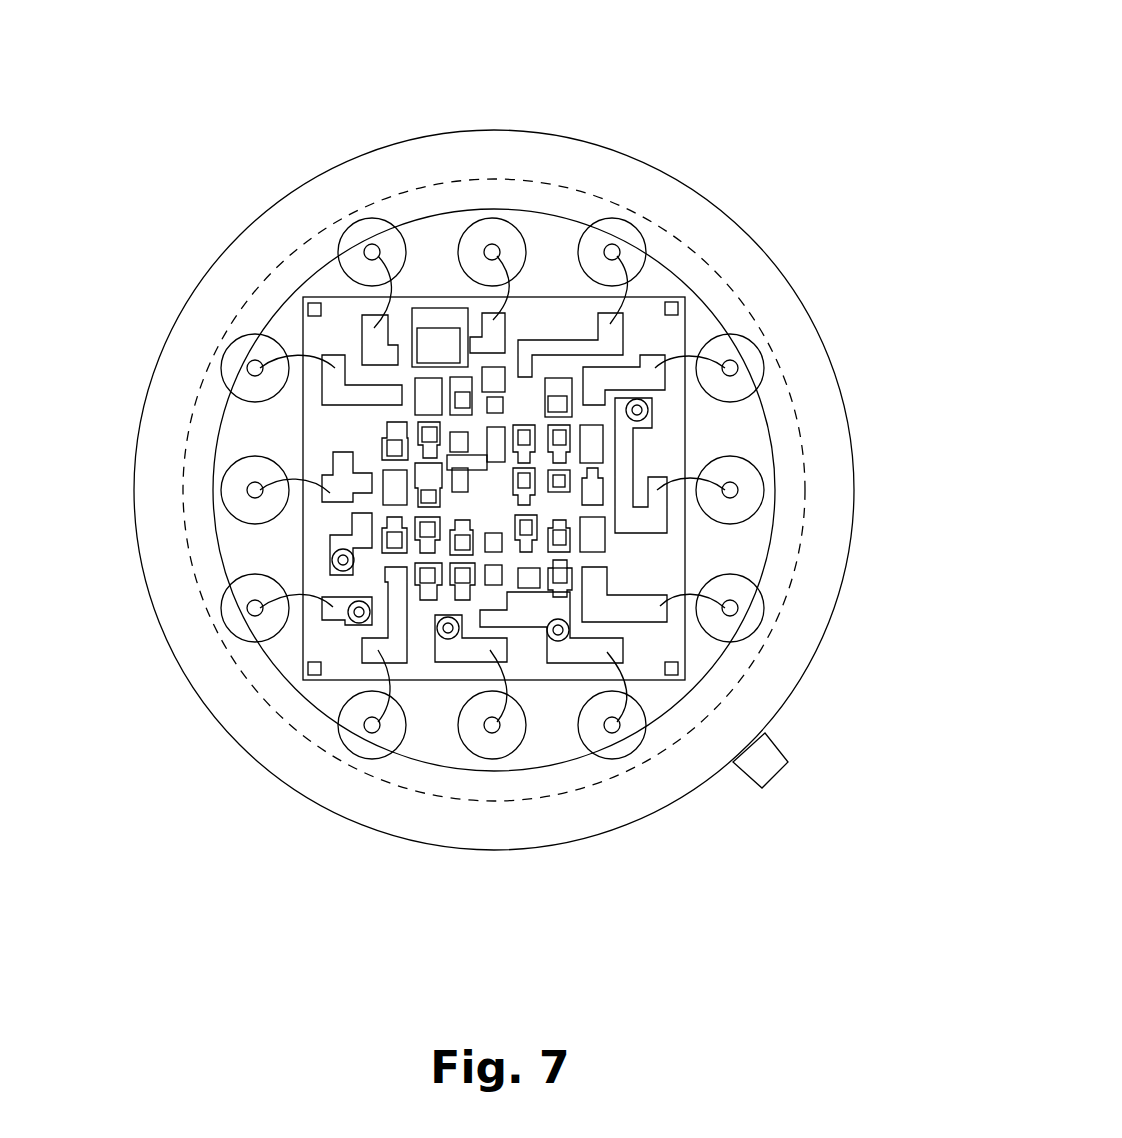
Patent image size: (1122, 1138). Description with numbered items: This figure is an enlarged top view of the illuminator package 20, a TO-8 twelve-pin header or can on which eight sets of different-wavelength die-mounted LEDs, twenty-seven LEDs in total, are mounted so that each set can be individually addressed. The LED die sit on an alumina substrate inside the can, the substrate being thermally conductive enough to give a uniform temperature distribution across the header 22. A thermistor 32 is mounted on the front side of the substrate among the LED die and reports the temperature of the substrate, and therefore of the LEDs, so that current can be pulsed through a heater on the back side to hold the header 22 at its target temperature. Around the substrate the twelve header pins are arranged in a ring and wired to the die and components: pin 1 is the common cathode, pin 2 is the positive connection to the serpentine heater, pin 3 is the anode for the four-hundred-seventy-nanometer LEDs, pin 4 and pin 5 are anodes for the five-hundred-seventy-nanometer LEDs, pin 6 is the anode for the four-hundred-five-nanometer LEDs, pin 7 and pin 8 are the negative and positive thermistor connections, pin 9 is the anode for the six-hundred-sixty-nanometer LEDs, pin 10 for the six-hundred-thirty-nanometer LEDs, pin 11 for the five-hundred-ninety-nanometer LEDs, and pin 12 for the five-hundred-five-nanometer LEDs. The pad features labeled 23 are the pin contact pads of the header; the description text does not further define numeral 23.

The pin 1 is at (563, 760).
The pin 2 is at (480, 772).
The pin 3 is at (372, 748).
The pin 4 is at (220, 608).
The pin 5 is at (221, 488).
The pin 6 is at (237, 369).
The pin 7 is at (372, 204).
The pin 8 is at (492, 198).
The pin 9 is at (582, 210).
The pin 10 is at (760, 369).
The pin 11 is at (775, 465).
The pin 12 is at (761, 604).
The illuminator package 20 is at (684, 139).
The header 22 is at (648, 308).
The contact pads 23 is at (258, 630).
The thermistor 32 is at (447, 337).